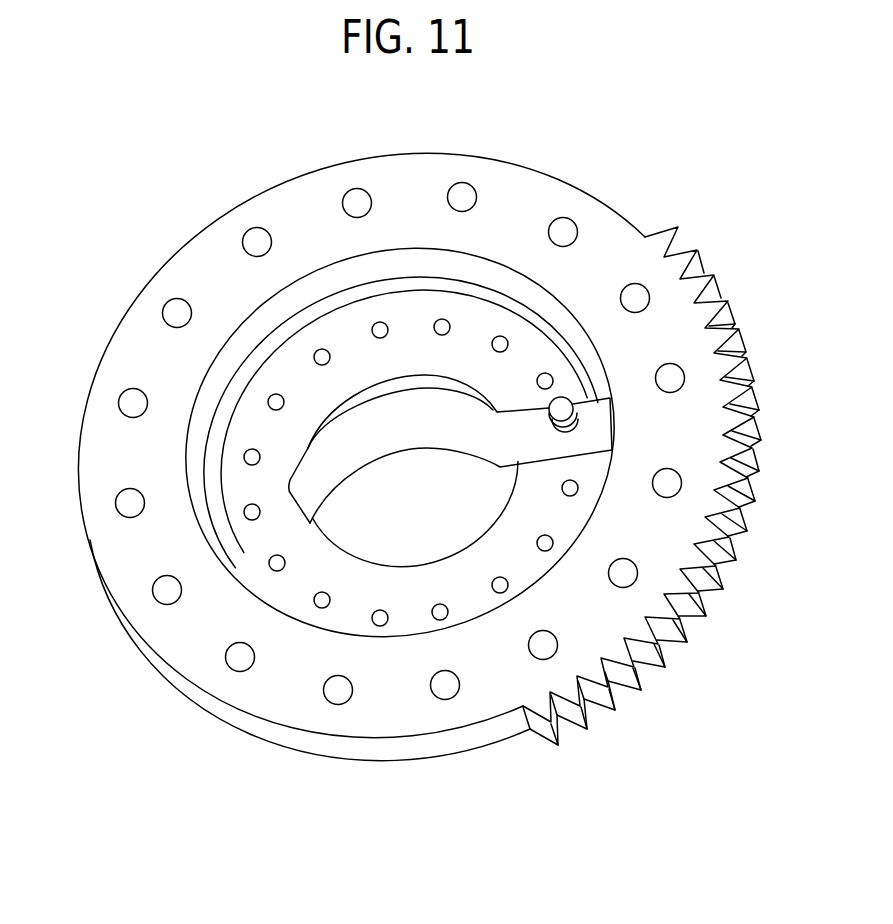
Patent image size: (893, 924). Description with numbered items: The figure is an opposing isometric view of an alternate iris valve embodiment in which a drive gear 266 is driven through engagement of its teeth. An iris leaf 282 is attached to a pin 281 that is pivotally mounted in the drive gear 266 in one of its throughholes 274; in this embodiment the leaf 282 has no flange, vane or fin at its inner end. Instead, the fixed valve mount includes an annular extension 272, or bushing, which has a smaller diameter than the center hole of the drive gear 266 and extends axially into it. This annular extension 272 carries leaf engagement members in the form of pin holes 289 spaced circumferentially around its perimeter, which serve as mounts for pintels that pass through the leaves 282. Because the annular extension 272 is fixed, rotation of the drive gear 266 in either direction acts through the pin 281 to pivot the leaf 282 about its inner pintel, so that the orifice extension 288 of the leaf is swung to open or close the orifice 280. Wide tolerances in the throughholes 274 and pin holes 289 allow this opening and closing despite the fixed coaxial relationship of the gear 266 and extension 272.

The drive gear 266 is at (655, 640).
The annular extension 272 is at (243, 486).
The throughholes 274 is at (440, 688).
The orifice 280 is at (439, 513).
The pivot pin 281 is at (563, 407).
The iris leaf 282 is at (600, 433).
The orifice extension 288 is at (305, 492).
The pin holes 289 is at (275, 400).